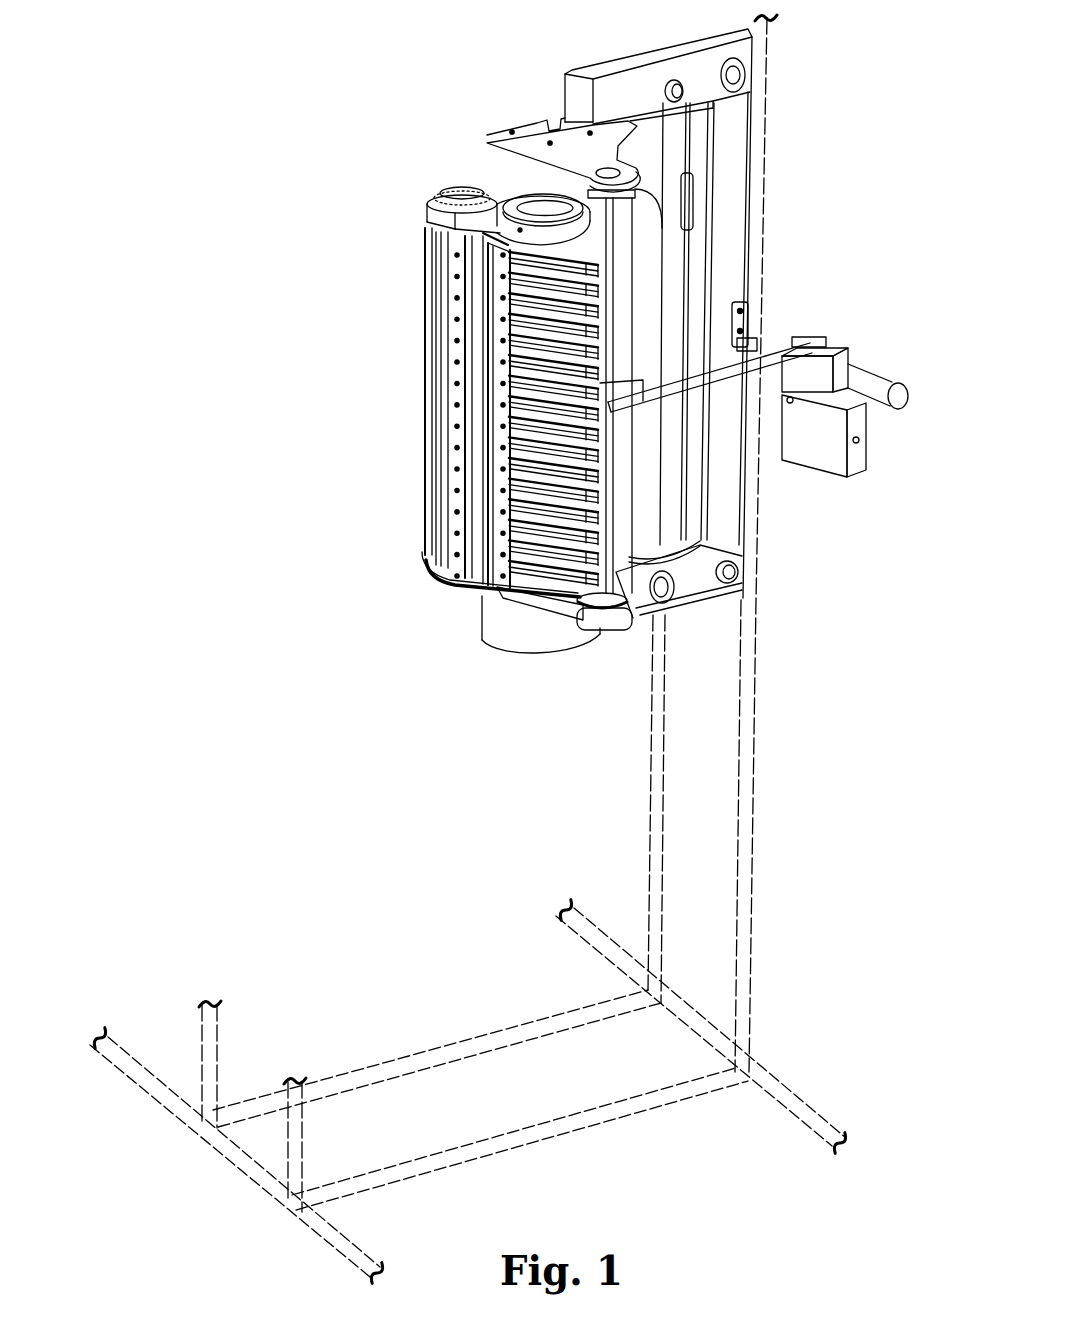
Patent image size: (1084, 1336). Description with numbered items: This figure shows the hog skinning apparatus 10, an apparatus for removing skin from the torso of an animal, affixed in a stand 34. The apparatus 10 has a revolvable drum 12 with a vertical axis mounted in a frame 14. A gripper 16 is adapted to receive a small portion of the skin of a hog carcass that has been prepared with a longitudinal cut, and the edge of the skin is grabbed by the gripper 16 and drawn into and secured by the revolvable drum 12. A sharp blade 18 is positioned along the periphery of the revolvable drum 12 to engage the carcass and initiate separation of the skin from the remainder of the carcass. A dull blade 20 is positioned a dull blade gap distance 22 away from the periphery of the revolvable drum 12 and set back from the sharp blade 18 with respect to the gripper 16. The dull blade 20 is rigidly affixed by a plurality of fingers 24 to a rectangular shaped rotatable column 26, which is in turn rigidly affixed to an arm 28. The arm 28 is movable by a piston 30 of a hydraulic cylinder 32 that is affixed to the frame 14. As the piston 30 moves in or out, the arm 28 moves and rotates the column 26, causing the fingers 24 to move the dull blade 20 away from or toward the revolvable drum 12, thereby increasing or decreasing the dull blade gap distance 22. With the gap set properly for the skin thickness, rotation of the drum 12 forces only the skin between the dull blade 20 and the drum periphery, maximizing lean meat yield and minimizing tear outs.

The hog skinning apparatus 10 is at (499, 642).
The revolvable drum 12 is at (648, 292).
The frame 14 is at (585, 85).
The gripper 16 is at (447, 192).
The sharp blade 18 is at (467, 262).
The dull blade 20 is at (488, 488).
The dull blade gap distance 22 is at (493, 283).
The fingers 24 is at (550, 258).
The rotatable column 26 is at (618, 570).
The arm 28 is at (707, 378).
The piston 30 is at (820, 348).
The hydraulic cylinder 32 is at (843, 360).
The stand 34 is at (748, 927).